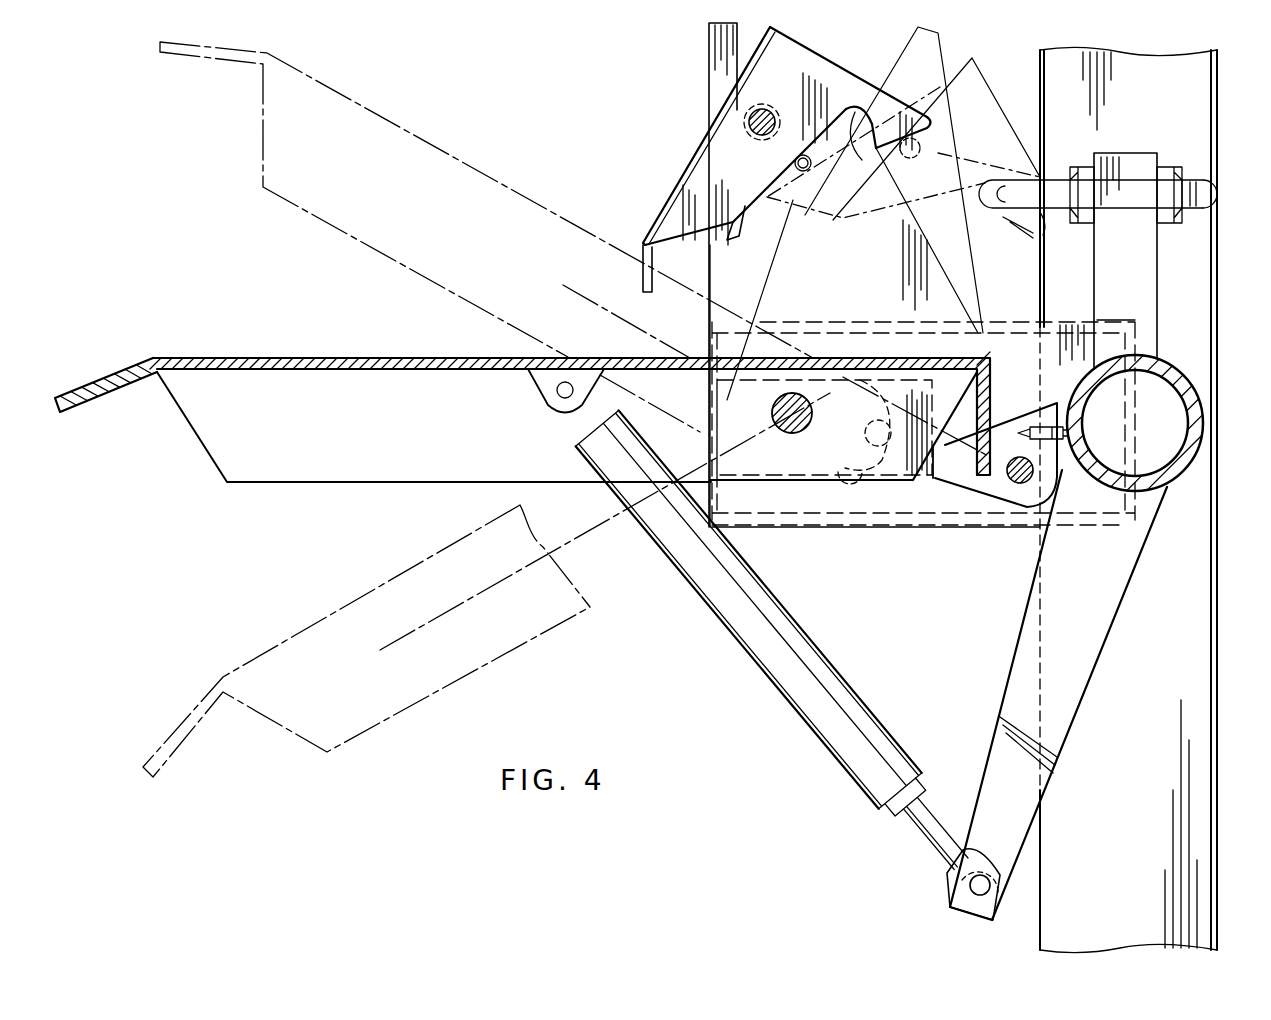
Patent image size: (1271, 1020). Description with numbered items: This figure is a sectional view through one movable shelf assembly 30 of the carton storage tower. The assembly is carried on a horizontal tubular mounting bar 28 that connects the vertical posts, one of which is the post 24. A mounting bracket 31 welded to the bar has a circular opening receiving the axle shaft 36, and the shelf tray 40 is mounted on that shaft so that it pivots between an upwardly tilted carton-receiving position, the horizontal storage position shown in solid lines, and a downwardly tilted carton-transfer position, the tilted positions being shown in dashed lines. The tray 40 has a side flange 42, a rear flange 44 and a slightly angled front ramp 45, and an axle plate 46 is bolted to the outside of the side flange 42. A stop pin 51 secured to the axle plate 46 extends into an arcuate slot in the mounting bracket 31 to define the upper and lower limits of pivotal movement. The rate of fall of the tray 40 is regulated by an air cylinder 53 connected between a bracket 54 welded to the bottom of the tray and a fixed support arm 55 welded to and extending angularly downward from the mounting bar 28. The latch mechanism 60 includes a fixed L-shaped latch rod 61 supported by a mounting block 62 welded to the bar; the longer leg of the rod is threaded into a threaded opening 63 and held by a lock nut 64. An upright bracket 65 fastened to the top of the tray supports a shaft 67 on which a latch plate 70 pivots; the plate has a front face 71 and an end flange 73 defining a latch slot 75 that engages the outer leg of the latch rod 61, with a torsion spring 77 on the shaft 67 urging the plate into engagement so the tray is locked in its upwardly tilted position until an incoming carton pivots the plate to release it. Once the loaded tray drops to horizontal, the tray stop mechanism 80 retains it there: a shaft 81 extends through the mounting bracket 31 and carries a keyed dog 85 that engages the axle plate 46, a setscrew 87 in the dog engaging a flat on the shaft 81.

The vertical post 24 is at (1218, 472).
The horizontal tubular mounting bar 28 is at (1195, 385).
The movable shelf assembly 30 is at (375, 340).
The mounting bracket 31 is at (1028, 525).
The axle shaft 36 is at (782, 429).
The shelf tray 40 is at (262, 355).
The side flange 42 is at (275, 485).
The rear flange 44 is at (998, 420).
The front ramp 45 is at (125, 360).
The axle plate 46 is at (930, 482).
The stop pin 51 is at (842, 450).
The air cylinder 53 is at (745, 630).
The bracket 54 is at (540, 402).
The fixed support arm 55 is at (1025, 678).
The latch mechanism 60 is at (827, 275).
The latch rod 61 is at (1020, 210).
The mounting block 62 is at (1146, 258).
The threaded opening 63 is at (1078, 170).
The lock nut 64 is at (1180, 178).
The upright bracket 65 is at (705, 45).
The shaft 67 is at (750, 126).
The latch plate 70 is at (818, 60).
The front face 71 is at (692, 154).
The end flange 73 is at (913, 155).
The latch slot 75 is at (866, 150).
The torsion spring 77 is at (745, 112).
The tray stop mechanism 80 is at (1014, 477).
The shaft 81 is at (1024, 480).
The dog 85 is at (990, 505).
The setscrew 87 is at (1077, 429).